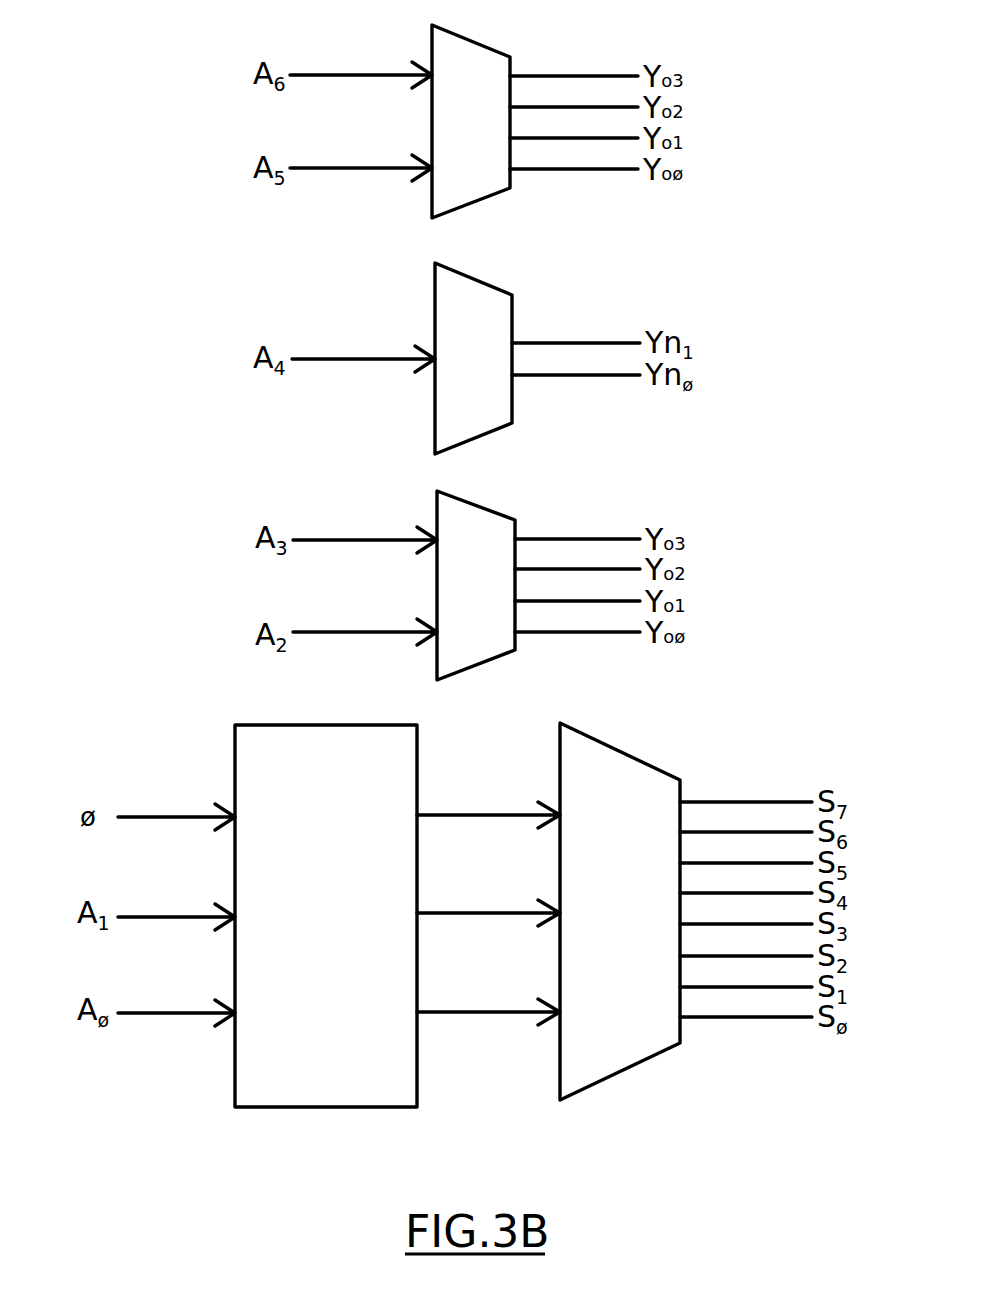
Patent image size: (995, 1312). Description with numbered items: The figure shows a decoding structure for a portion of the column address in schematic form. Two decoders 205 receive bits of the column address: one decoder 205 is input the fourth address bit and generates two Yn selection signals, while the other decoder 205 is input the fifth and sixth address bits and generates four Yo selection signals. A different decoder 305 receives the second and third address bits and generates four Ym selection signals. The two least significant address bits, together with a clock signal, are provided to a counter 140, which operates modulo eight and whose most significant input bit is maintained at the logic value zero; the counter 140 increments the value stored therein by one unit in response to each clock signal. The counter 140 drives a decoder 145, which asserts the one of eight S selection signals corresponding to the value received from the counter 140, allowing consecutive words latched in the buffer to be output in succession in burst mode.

The decoder 205 is at (488, 44).
The decoder 305 is at (490, 510).
The counter 140 is at (288, 1108).
The decoder 145 is at (595, 1088).